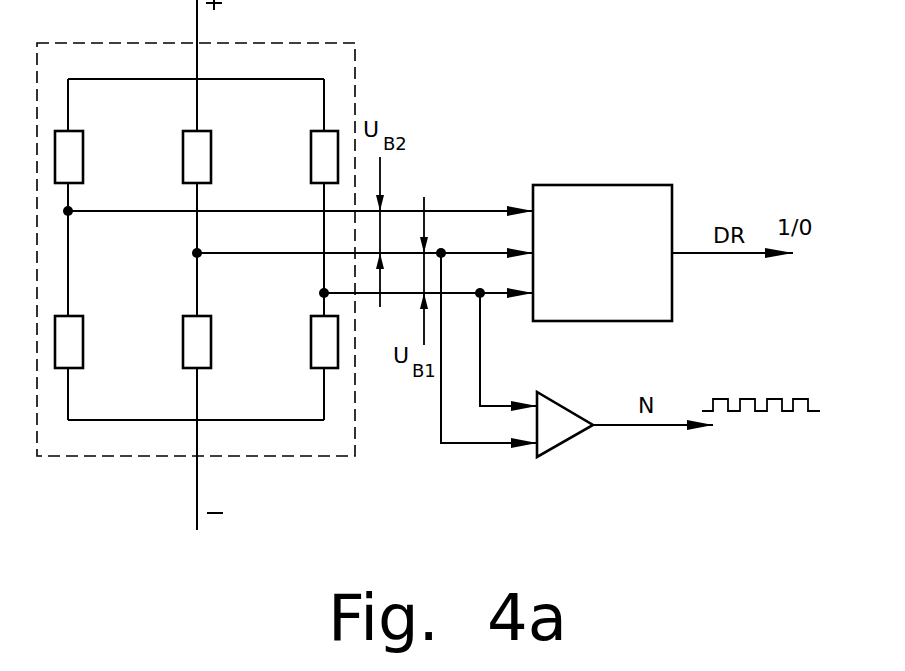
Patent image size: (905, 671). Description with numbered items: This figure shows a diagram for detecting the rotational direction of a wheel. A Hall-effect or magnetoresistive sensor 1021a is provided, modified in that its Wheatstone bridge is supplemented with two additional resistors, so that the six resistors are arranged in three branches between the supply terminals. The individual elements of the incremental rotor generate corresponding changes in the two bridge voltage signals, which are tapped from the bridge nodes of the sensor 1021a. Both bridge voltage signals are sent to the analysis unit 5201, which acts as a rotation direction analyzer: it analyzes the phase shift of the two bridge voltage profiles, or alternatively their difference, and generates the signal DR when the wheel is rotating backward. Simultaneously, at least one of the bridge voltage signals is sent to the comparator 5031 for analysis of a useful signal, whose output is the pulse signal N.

The Hall-effect or magnetoresistive sensor 1021a is at (355, 84).
The analysis unit 5201 is at (600, 198).
The comparator 5031 is at (560, 437).